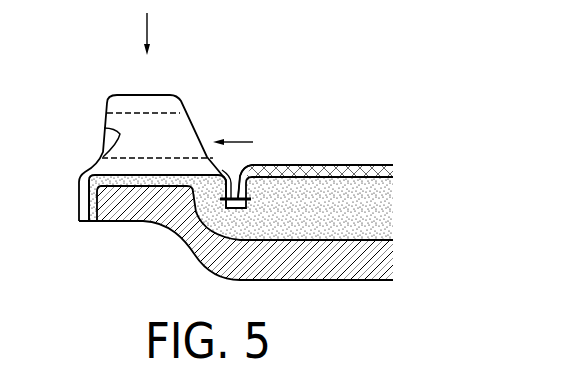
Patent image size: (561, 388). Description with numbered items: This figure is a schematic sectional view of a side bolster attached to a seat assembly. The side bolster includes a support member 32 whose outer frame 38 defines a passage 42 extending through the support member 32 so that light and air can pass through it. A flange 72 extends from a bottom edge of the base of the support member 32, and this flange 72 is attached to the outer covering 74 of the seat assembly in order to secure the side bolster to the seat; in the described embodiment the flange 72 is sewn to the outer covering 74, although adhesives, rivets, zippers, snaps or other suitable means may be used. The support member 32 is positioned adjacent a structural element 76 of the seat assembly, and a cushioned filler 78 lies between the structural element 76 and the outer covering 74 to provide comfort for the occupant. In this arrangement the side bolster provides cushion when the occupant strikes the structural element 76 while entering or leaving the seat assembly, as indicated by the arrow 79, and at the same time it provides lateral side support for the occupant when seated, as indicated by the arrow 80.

The support member 32 is at (183, 97).
The outer frame 38 is at (147, 95).
The passage 42 is at (158, 132).
The flange 72 is at (82, 192).
The outer covering 74 is at (364, 172).
The structural element 76 is at (280, 260).
The cushioned filler 78 is at (360, 208).
The arrow 79 is at (147, 31).
The arrow 80 is at (243, 142).